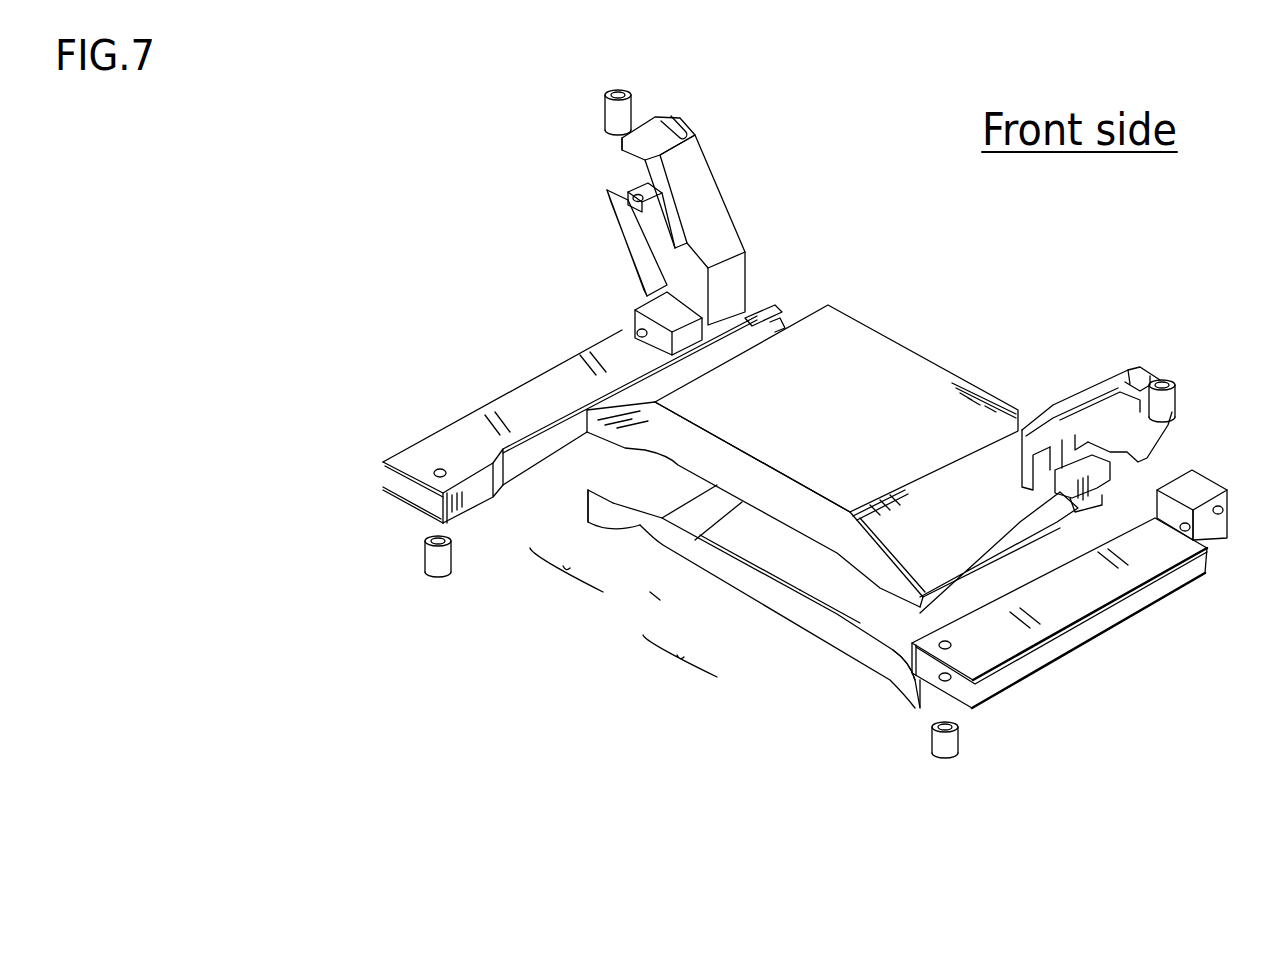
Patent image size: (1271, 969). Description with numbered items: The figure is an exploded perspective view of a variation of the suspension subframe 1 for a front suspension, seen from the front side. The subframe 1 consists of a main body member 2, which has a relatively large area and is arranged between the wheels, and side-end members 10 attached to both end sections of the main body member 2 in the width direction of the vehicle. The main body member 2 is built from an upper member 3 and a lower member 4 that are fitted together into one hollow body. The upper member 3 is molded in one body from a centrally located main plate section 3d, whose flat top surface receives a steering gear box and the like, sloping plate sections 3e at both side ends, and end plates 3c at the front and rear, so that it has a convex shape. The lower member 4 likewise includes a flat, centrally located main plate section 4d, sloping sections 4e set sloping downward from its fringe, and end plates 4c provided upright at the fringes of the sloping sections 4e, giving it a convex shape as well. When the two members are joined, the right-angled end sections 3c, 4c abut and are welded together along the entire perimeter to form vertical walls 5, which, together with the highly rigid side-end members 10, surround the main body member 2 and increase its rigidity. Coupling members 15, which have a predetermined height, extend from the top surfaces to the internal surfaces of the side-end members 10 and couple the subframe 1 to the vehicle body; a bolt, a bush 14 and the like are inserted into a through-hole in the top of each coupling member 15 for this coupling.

The suspension subframe 1 is at (650, 592).
The main body member 2 is at (558, 614).
The upper member 3 is at (703, 462).
The end plates of upper member 3c is at (793, 507).
The main plate section of upper member 3d is at (917, 377).
The sloping plate sections of upper member 3e is at (790, 330).
The lower member 4 is at (665, 532).
The end plates of lower member 4c is at (783, 603).
The main plate section of lower member 4d is at (863, 622).
The sloping sections of lower member 4e is at (638, 500).
The vertical walls 5 is at (680, 666).
The side-end members 10 is at (402, 513).
The bush 14 is at (603, 112).
The coupling members 15 is at (703, 125).